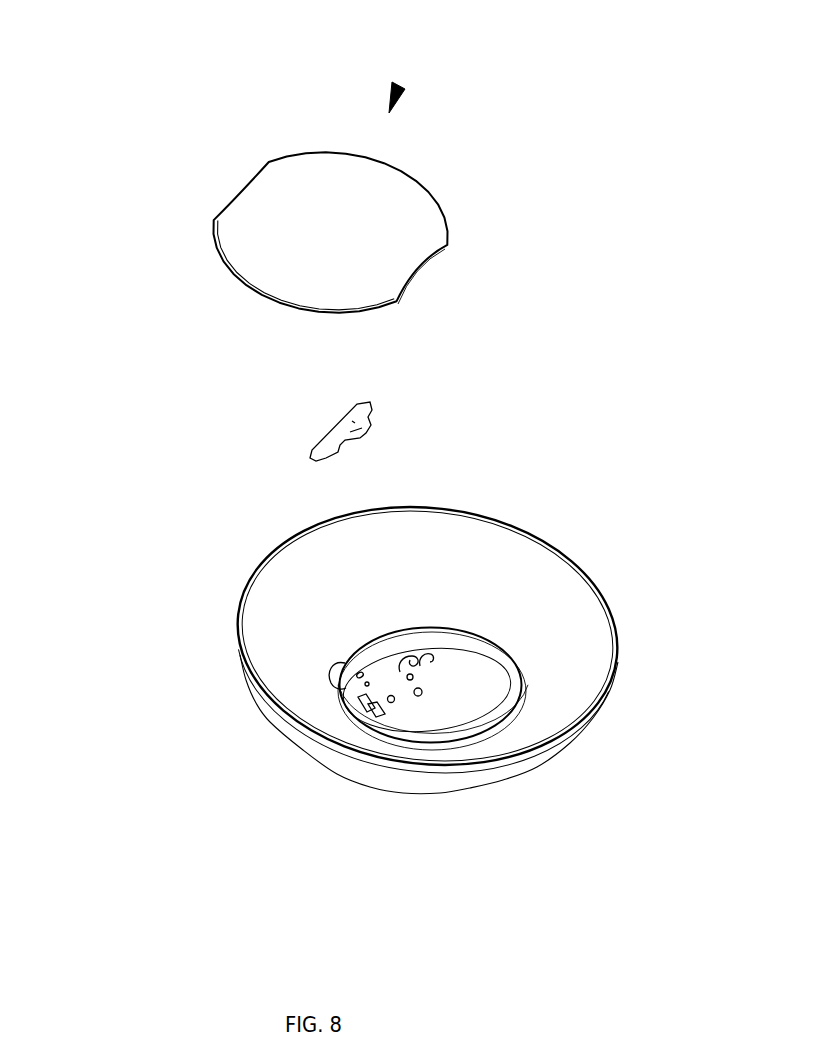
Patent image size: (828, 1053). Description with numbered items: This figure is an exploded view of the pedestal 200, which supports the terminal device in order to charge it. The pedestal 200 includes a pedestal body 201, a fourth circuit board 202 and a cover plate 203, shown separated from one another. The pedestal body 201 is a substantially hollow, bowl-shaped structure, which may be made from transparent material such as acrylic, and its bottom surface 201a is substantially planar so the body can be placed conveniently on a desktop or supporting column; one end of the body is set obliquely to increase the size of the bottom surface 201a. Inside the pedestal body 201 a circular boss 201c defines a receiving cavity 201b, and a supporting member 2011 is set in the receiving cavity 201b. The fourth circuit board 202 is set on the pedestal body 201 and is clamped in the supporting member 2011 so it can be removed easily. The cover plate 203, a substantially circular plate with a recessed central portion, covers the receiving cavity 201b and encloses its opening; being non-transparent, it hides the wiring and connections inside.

The pedestal 200 is at (400, 84).
The pedestal body 201 is at (513, 583).
The bottom surface 201a is at (457, 710).
The receiving cavity 201b is at (387, 678).
The circular boss 201c is at (378, 725).
The supporting member 2011 is at (352, 702).
The fourth circuit board 202 is at (372, 419).
The cover plate 203 is at (388, 217).